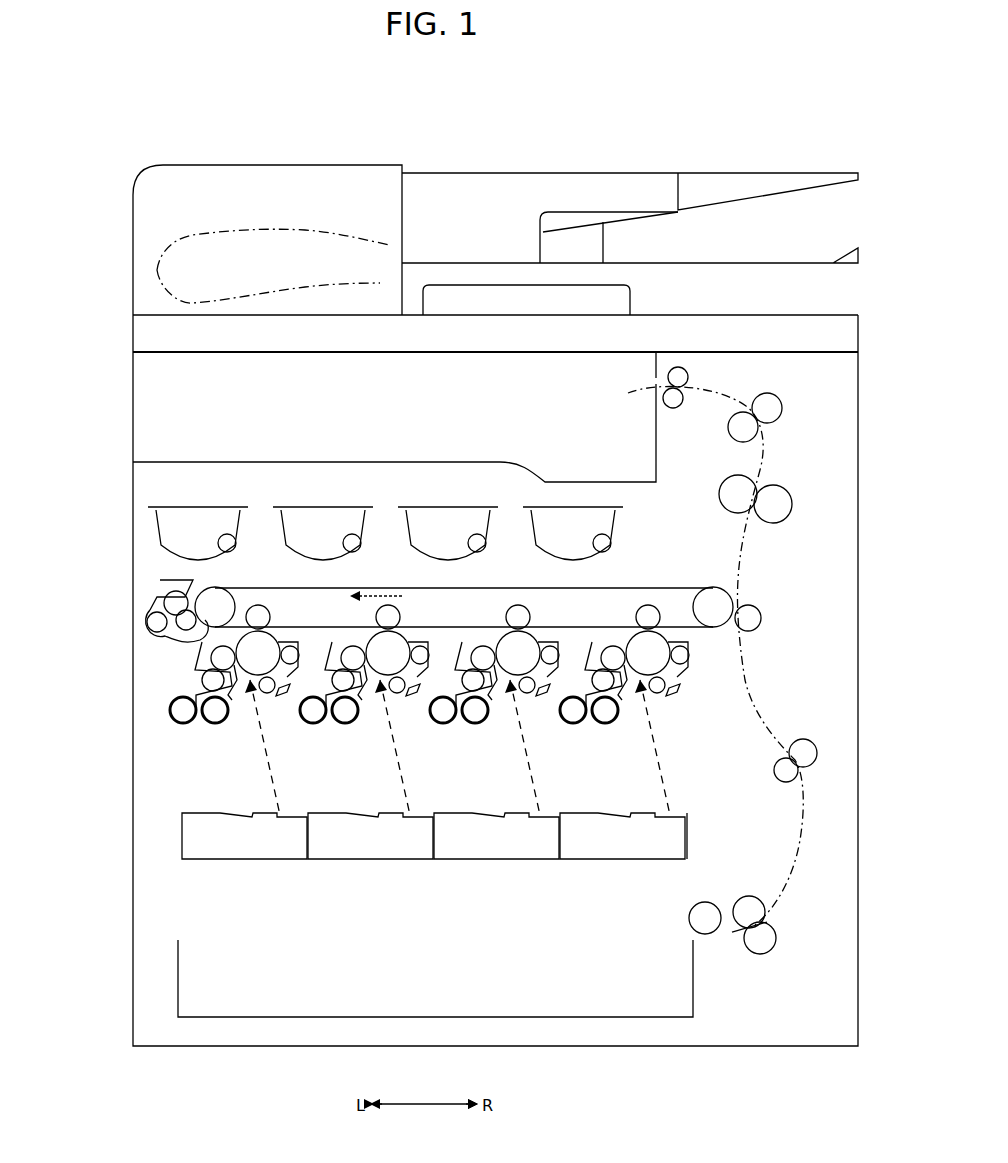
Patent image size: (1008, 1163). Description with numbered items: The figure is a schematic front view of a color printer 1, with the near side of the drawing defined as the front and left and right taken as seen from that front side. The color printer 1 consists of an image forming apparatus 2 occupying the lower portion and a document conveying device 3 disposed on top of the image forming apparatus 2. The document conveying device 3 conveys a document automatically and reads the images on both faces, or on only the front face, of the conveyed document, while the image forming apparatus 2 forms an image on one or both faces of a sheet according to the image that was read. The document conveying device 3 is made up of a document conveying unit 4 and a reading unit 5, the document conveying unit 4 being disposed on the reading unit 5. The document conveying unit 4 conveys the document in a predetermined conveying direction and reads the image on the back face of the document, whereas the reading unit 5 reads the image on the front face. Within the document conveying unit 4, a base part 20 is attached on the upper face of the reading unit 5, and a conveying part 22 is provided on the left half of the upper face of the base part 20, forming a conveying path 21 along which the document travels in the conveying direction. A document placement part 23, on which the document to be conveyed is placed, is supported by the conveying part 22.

The color printer 1 is at (330, 118).
The image forming apparatus 2 is at (130, 545).
The document conveying device 3 is at (90, 252).
The document conveying unit 4 is at (133, 240).
The reading unit 5 is at (133, 335).
The base part 20 is at (760, 258).
The conveying path 21 is at (305, 230).
The conveying part 22 is at (237, 165).
The document placement part 23 is at (540, 173).